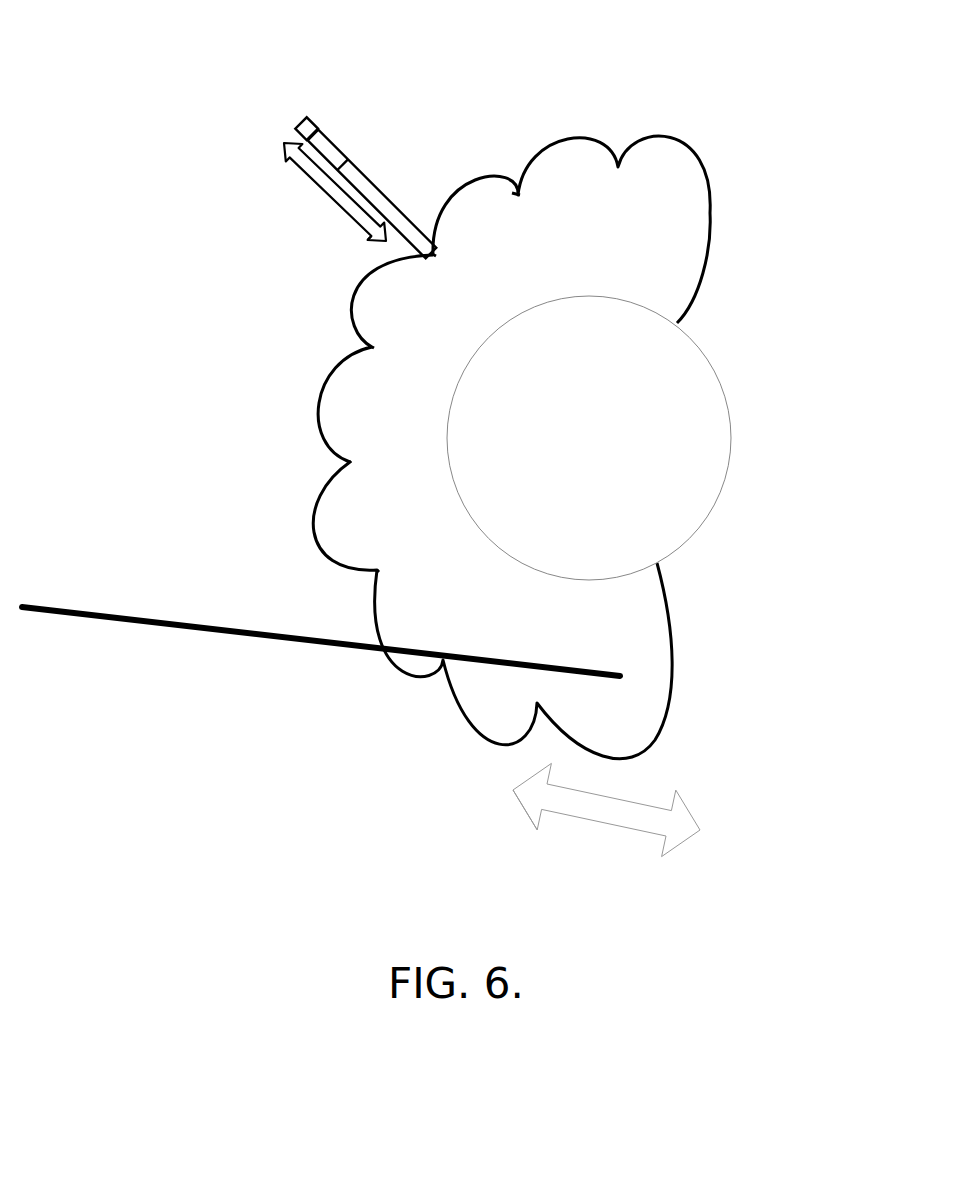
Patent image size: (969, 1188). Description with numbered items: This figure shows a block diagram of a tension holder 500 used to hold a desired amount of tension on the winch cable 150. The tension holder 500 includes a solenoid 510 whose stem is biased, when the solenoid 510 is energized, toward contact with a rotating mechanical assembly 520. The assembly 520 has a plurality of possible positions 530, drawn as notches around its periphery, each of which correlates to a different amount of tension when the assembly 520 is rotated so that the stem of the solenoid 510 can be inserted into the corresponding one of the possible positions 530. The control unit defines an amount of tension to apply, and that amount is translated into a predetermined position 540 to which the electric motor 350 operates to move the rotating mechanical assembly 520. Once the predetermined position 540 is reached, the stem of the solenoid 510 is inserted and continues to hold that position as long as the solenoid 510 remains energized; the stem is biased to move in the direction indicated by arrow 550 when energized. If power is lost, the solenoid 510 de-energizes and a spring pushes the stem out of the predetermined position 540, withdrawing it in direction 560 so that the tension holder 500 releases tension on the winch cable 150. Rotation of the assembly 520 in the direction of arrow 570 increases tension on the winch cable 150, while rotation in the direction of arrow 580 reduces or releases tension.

The tension holder 500 is at (147, 123).
The solenoid 510 is at (372, 186).
The rotating mechanical assembly 520 is at (427, 731).
The possible positions 530 is at (520, 193).
The predetermined position 540 is at (436, 256).
The arrow 550 is at (369, 248).
The direction 560 is at (285, 160).
The arrow 570 is at (687, 823).
The arrow 580 is at (525, 803).
The electric motor 350 is at (675, 455).
The winch cable 150 is at (163, 613).